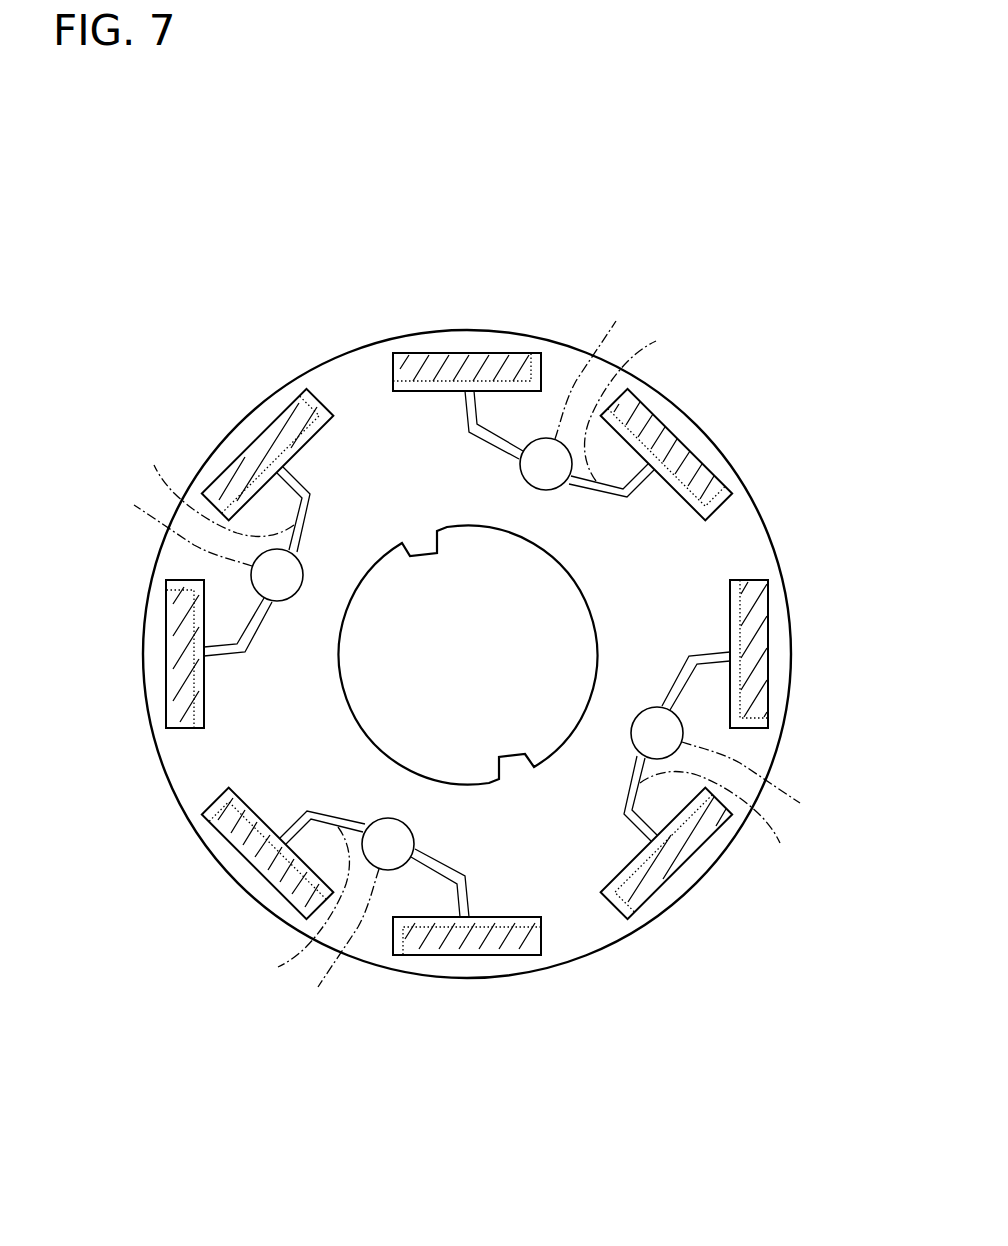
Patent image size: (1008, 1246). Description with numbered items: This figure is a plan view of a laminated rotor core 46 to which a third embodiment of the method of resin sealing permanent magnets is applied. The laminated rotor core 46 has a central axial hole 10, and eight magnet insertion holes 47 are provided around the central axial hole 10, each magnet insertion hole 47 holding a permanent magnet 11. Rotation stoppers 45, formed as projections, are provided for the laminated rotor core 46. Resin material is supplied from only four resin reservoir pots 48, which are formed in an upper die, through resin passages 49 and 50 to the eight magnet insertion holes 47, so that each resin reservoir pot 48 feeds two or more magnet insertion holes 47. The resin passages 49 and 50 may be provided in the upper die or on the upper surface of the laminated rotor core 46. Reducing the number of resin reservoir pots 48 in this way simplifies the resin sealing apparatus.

The central axial hole 10 is at (533, 707).
The permanent magnet 11 is at (672, 452).
The rotation stopper 45 is at (527, 757).
The laminated rotor core 46 is at (698, 925).
The magnet insertion hole 47 is at (815, 528).
The resin reservoir pot 48 is at (657, 295).
The resin passage 49 is at (780, 843).
The resin passage 50 is at (677, 687).